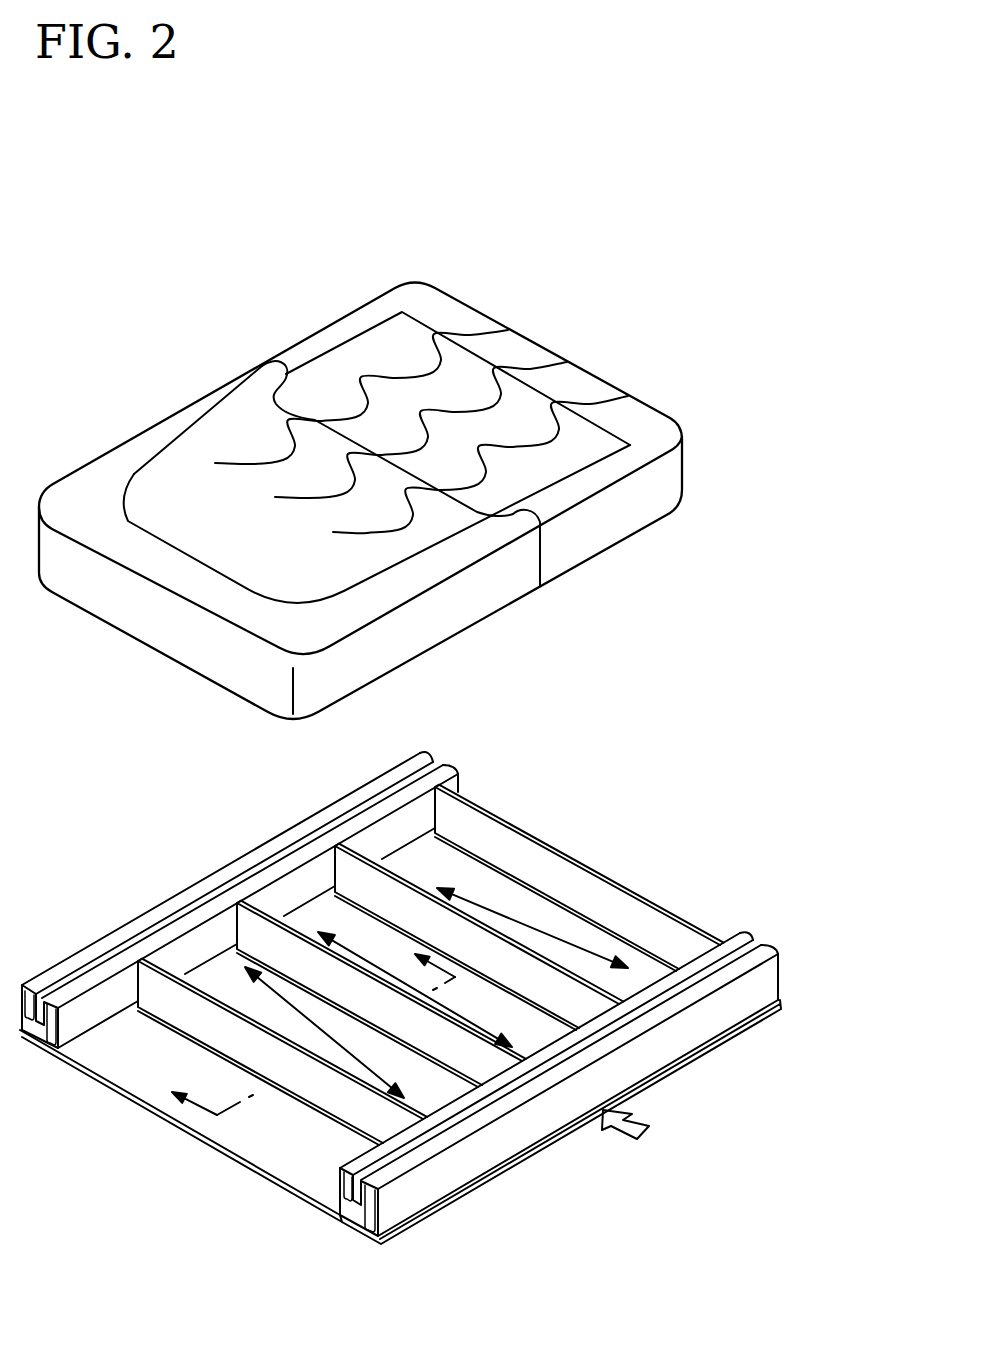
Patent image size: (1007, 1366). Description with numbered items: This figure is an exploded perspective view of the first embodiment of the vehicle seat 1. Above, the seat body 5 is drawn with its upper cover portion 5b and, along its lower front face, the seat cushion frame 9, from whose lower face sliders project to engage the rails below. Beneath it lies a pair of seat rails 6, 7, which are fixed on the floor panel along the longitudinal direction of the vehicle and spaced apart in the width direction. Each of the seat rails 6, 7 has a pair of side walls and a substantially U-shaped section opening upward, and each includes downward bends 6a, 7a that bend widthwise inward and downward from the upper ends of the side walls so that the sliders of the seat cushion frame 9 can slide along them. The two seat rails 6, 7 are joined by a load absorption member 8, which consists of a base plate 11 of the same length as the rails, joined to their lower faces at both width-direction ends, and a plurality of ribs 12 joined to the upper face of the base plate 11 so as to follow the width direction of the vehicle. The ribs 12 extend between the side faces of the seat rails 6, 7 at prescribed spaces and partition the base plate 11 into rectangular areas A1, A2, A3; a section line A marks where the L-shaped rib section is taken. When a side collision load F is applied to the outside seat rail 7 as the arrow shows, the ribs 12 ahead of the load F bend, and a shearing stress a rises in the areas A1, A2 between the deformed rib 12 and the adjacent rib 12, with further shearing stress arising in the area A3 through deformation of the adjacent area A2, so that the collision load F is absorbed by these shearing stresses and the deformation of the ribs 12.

The vehicle seat 1 is at (773, 423).
The seat body 5 is at (458, 378).
The upper cover portion 5b is at (578, 349).
The seat cushion frame 9 is at (588, 540).
The seat rail 6 is at (440, 767).
The downward bend 6a is at (43, 1024).
The seat rail 7 is at (779, 957).
The downward bend 7a is at (366, 1207).
The load absorption member 8 is at (590, 846).
The base plate 11 is at (123, 1063).
The rib 12 is at (583, 1007).
The rectangular area A1 is at (213, 973).
The rectangular area A2 is at (325, 903).
The rectangular area A3 is at (413, 857).
The shearing stress a is at (563, 941).
The section line A- A is at (301, 1021).
The collision load F is at (635, 1137).